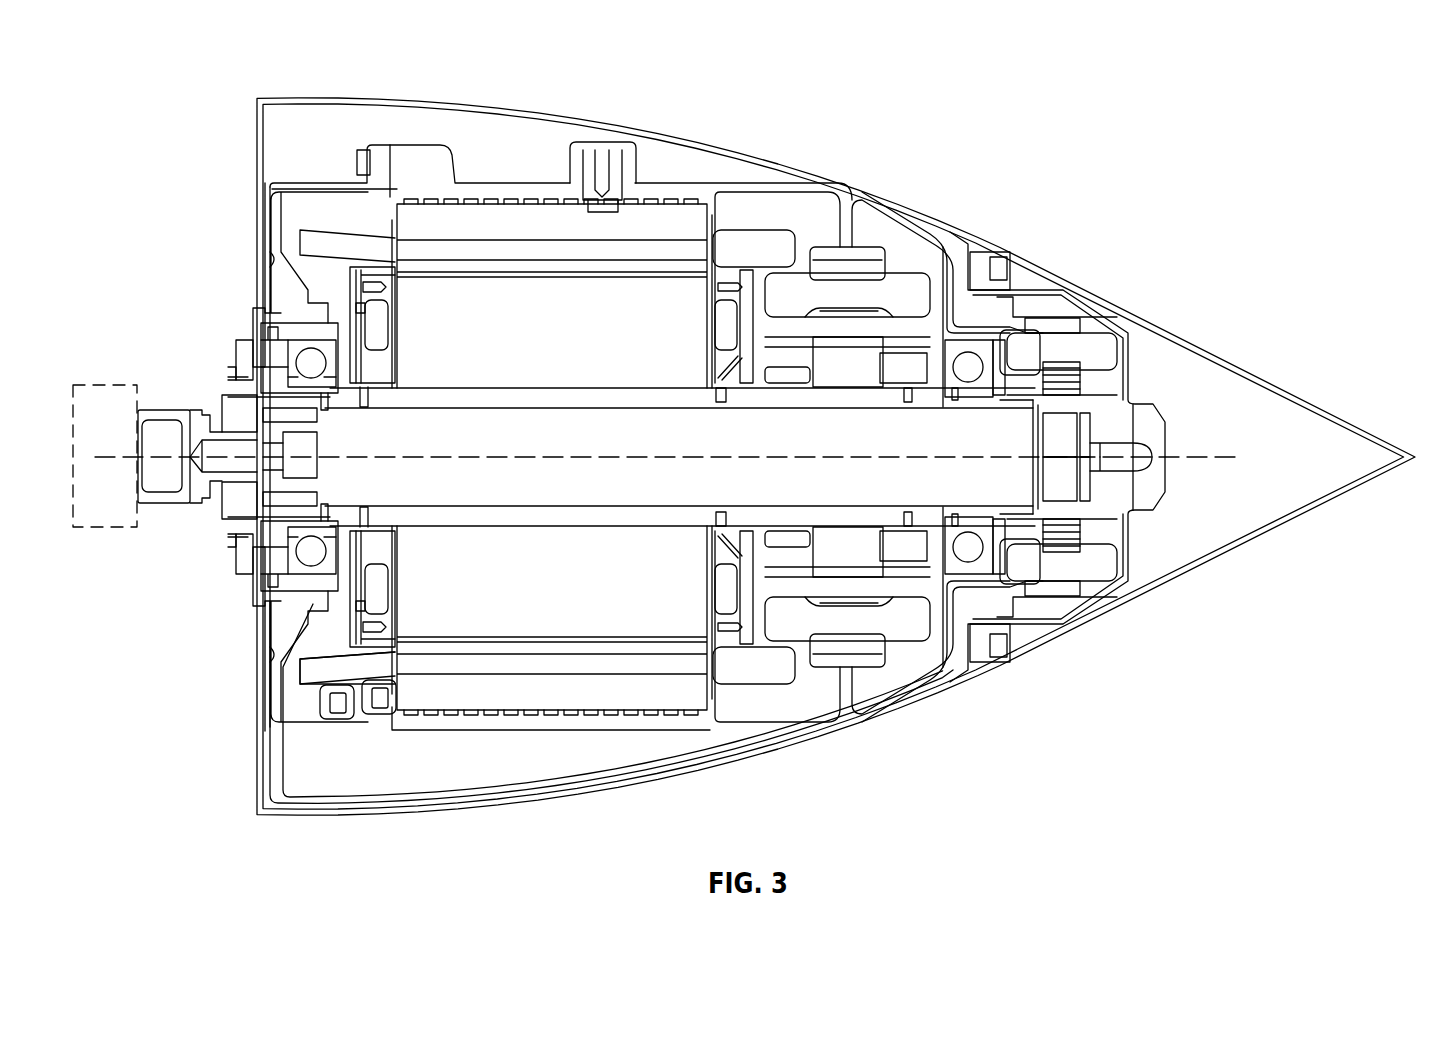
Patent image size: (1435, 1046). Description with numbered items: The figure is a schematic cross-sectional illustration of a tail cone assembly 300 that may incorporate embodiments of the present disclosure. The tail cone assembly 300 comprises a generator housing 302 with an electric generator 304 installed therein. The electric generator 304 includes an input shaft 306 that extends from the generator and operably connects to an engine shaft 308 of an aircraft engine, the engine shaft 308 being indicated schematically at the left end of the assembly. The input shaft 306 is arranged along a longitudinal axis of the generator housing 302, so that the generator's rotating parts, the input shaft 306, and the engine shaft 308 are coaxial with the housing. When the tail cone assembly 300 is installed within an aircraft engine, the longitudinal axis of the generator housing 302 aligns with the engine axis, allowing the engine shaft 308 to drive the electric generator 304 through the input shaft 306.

The tail cone assembly 300 is at (1226, 174).
The generator housing 302 is at (1240, 372).
The electric generator 304 is at (331, 146).
The input shaft 306 is at (198, 410).
The engine shaft 308 is at (98, 512).